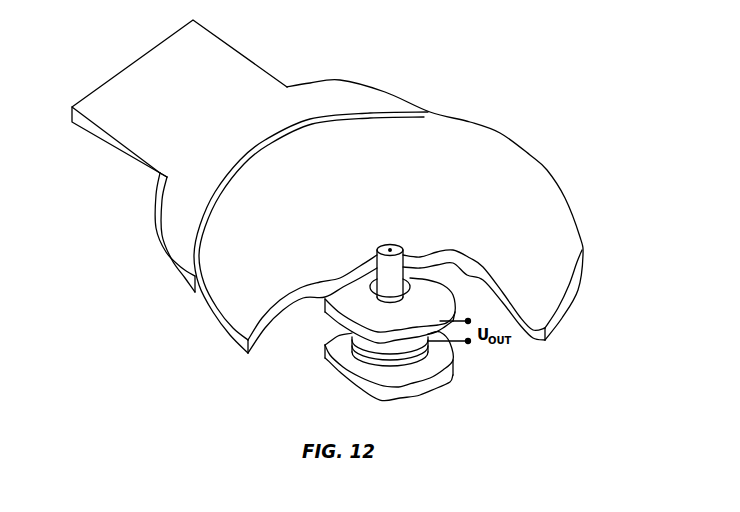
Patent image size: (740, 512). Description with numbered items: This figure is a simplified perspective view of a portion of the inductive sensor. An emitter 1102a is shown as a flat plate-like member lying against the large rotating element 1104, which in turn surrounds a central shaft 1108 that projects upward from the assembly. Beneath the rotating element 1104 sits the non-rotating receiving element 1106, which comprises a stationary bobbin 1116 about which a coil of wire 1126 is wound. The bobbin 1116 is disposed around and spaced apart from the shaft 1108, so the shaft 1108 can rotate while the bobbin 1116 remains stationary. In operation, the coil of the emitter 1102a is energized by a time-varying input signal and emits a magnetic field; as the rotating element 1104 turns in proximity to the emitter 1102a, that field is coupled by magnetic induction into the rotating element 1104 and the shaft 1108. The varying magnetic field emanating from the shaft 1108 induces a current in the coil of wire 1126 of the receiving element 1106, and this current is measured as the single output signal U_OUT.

The emitter 1102a is at (233, 58).
The rotating element 1104 is at (541, 180).
The non-rotating receiving element 1106 is at (472, 380).
The shaft 1108 is at (383, 289).
The stationary bobbin 1116 is at (445, 282).
The coil of wire 1126 is at (352, 345).